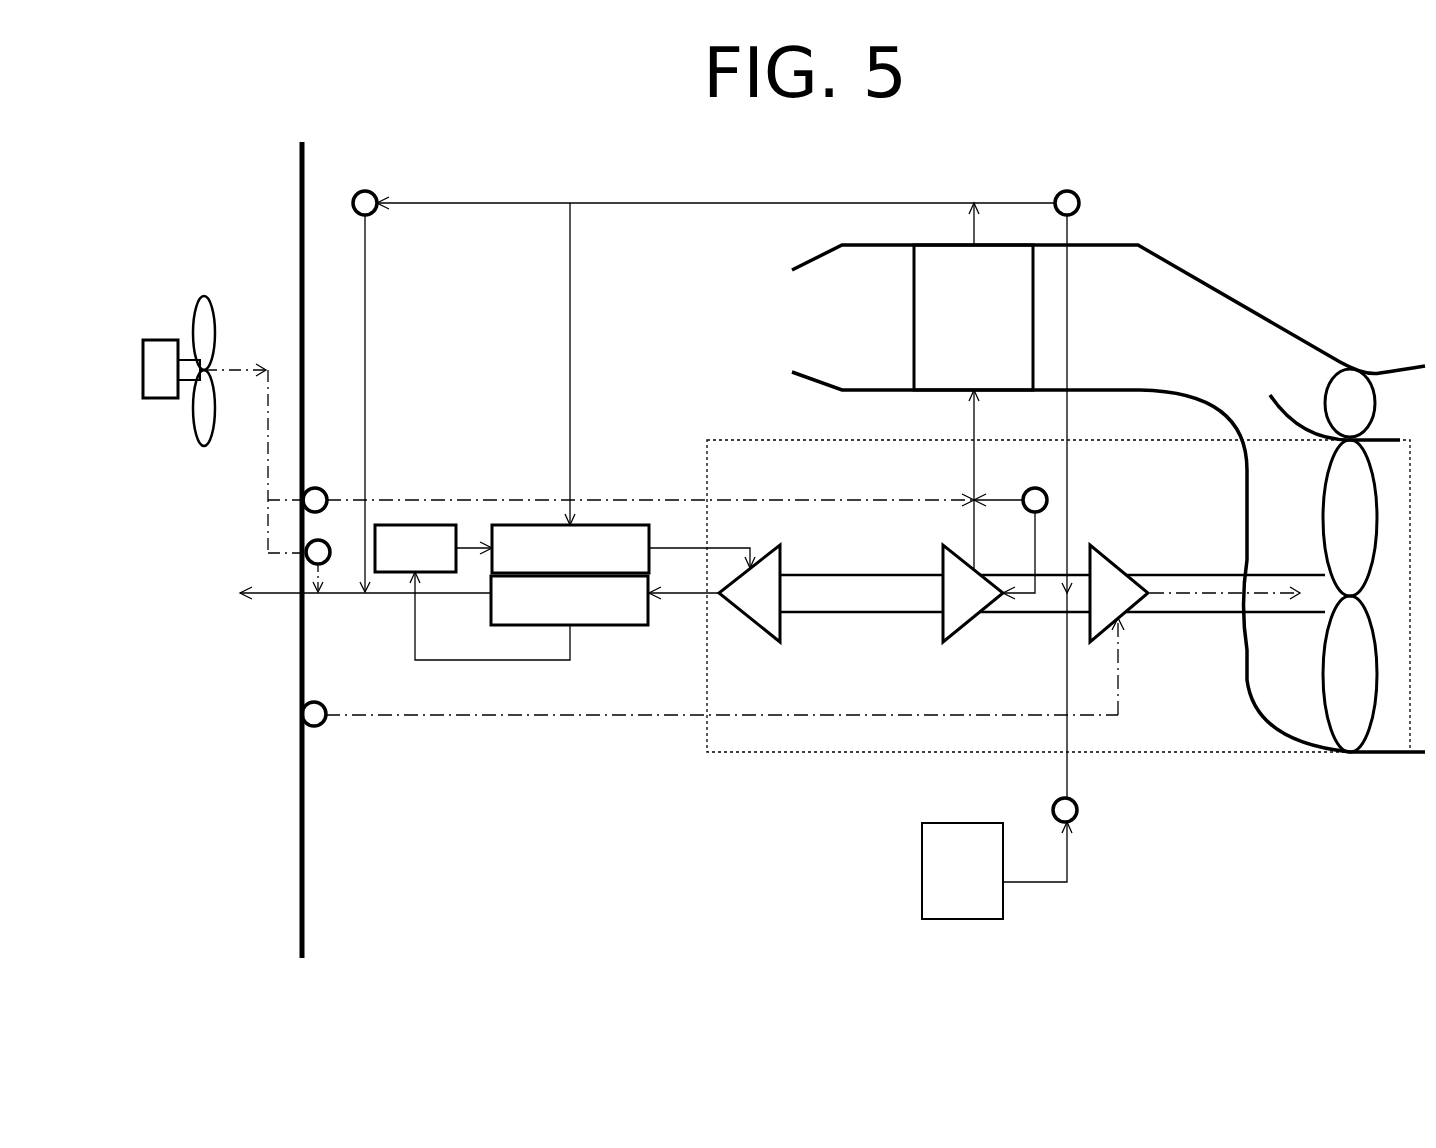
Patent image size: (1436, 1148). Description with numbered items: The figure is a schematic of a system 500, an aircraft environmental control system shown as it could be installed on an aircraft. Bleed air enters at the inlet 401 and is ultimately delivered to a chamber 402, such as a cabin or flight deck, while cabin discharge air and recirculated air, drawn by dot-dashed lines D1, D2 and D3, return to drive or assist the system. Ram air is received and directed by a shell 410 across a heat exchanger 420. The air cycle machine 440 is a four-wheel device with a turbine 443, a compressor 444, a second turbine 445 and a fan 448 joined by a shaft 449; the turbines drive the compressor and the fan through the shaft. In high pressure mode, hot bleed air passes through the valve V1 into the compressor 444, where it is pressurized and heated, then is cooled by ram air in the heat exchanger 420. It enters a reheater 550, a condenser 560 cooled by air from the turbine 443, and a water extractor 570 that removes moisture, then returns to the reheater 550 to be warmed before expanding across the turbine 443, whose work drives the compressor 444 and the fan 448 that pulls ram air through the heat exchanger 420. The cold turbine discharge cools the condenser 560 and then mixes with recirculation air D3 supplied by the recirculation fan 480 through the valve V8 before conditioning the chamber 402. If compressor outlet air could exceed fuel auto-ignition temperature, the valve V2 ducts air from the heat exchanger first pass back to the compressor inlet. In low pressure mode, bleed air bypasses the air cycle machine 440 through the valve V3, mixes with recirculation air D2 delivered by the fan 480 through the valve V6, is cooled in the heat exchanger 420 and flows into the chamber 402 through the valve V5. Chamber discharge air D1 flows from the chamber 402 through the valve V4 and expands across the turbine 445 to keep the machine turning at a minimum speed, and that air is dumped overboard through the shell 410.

The system 500 is at (1293, 168).
The chamber 402 is at (300, 143).
The recirculation fan 480 is at (180, 438).
The shell 410 is at (1200, 280).
The heat exchanger 420 is at (973, 317).
The air cycle machine 440 is at (1230, 753).
The turbine 443 is at (751, 593).
The compressor 444 is at (972, 593).
The turbine 445 is at (1118, 593).
The fan 448 is at (1297, 656).
The shaft 449 is at (1187, 614).
The inlet 401 is at (962, 871).
The reheater 550 is at (570, 549).
The condenser 560 is at (569, 600).
The water extractor 570 is at (415, 548).
The valve V1 is at (1076, 816).
The valve V2 is at (1077, 195).
The valve V3 is at (1028, 490).
The valve V4 is at (323, 722).
The valve V5 is at (375, 194).
The valve V6 is at (324, 490).
The valve V8 is at (330, 548).
The chamber discharge air D1 is at (442, 715).
The recirculation air D2 is at (507, 498).
The recirculation air D3 is at (268, 553).